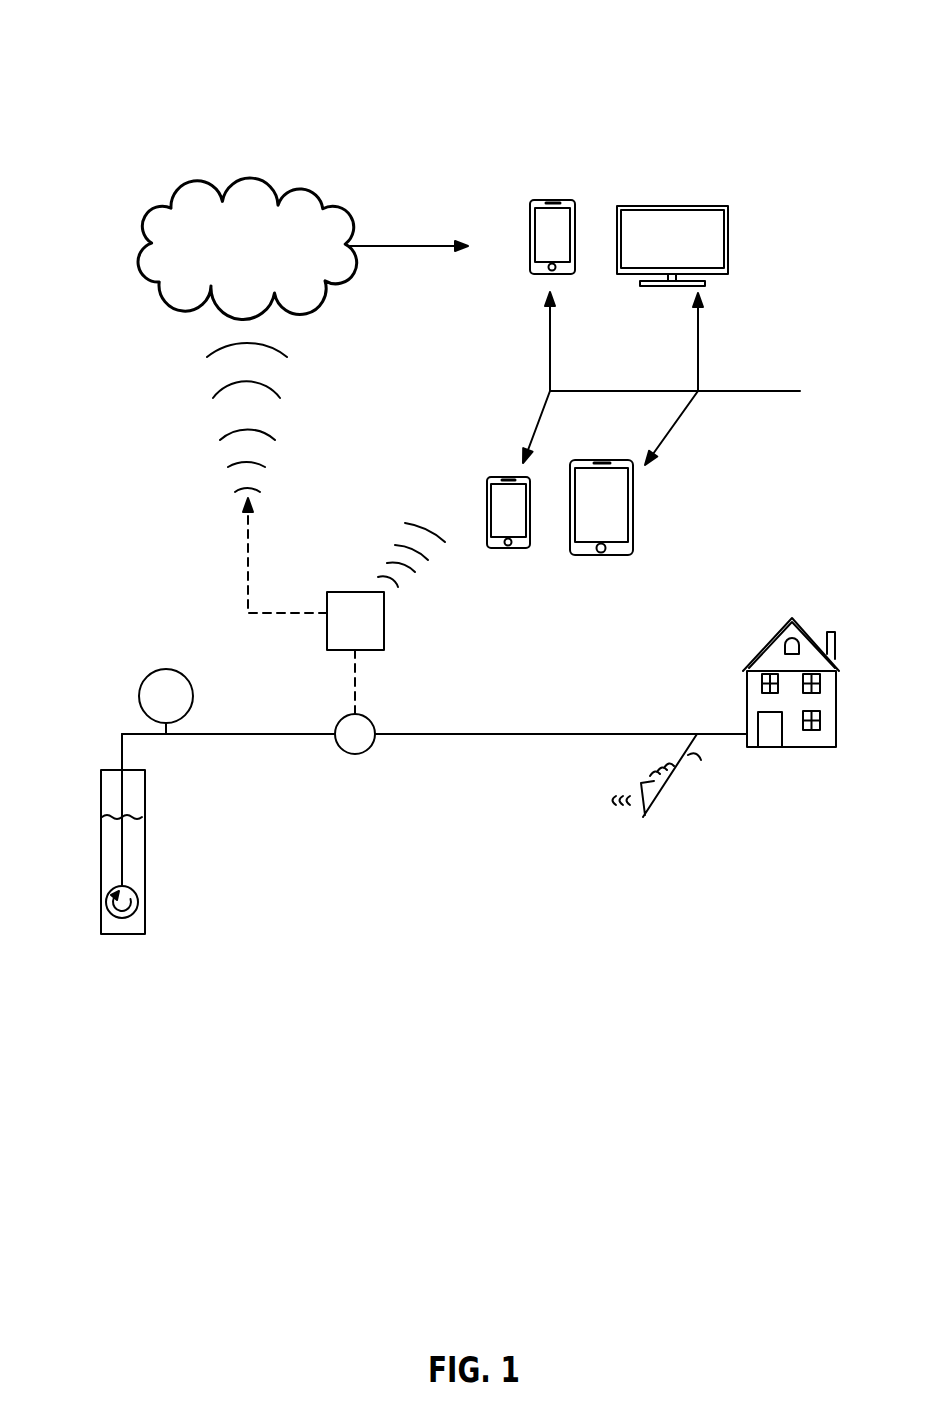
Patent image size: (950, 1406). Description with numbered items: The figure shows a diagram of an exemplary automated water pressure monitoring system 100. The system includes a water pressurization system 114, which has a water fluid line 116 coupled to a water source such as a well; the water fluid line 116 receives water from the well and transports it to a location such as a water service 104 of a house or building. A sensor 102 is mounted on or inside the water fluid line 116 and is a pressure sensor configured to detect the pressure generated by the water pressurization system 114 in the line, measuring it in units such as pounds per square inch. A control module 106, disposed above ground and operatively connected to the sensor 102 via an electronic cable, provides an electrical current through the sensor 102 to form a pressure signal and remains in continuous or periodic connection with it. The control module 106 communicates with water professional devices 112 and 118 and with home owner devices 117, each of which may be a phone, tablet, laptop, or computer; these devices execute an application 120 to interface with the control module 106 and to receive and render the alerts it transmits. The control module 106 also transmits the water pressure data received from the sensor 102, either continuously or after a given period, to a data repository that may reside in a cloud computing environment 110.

The automated water pressure monitoring system 100 is at (63, 61).
The sensor 102 is at (404, 741).
The water service 104 is at (681, 799).
The control module 106 is at (398, 606).
The cloud computing environment 110 is at (303, 248).
The water professional devices 112 is at (552, 203).
The water pressurization system 114 is at (214, 750).
The water fluid line 116 is at (434, 768).
The home owner devices 117 is at (495, 477).
The water professional devices 118 is at (603, 460).
The application 120 is at (809, 402).